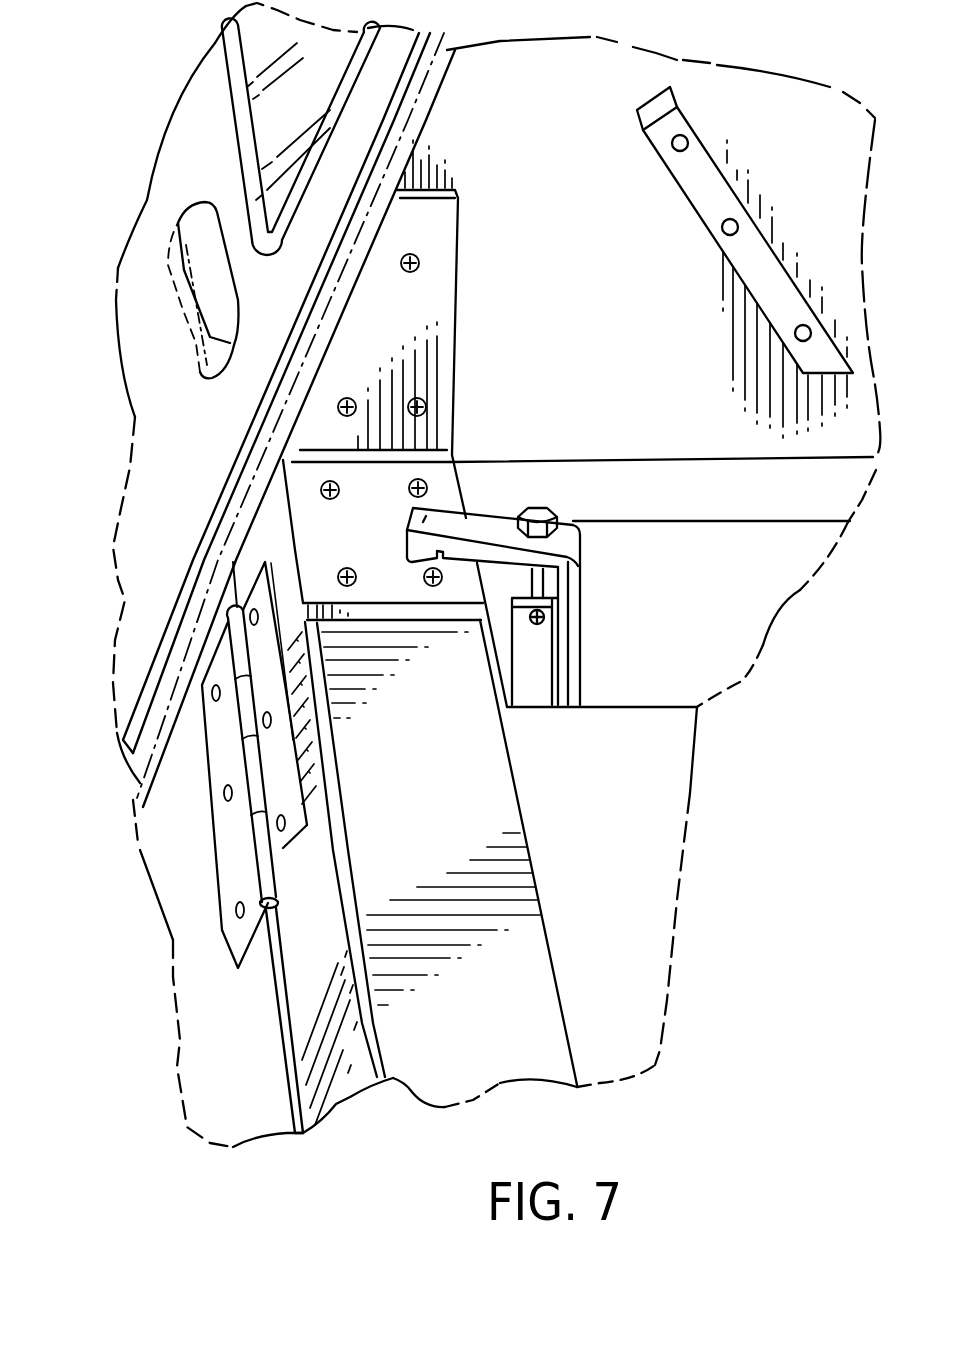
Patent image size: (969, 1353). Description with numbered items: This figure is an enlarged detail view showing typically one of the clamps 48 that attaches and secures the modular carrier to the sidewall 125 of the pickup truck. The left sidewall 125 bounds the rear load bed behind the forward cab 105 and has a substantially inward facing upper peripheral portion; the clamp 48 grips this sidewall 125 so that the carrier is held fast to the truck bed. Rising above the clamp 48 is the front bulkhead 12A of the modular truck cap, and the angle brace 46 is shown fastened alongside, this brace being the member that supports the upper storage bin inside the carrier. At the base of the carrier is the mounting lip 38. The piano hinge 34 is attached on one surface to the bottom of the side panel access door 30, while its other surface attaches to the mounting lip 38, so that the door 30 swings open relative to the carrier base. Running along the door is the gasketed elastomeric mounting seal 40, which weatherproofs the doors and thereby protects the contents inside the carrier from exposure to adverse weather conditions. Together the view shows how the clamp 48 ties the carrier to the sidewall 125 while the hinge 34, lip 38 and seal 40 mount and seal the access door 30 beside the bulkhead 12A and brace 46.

The forward cab 105 is at (165, 133).
The front bulkhead 12A is at (603, 219).
The angle brace 46 is at (425, 312).
The clamp 48 is at (497, 523).
The left sidewall 125 is at (200, 657).
The piano hinge 34 is at (232, 818).
The mounting lip 38 is at (430, 792).
The gasketed elastomeric mounting seal 40 is at (277, 1017).
The side panel access door 30 is at (243, 1121).